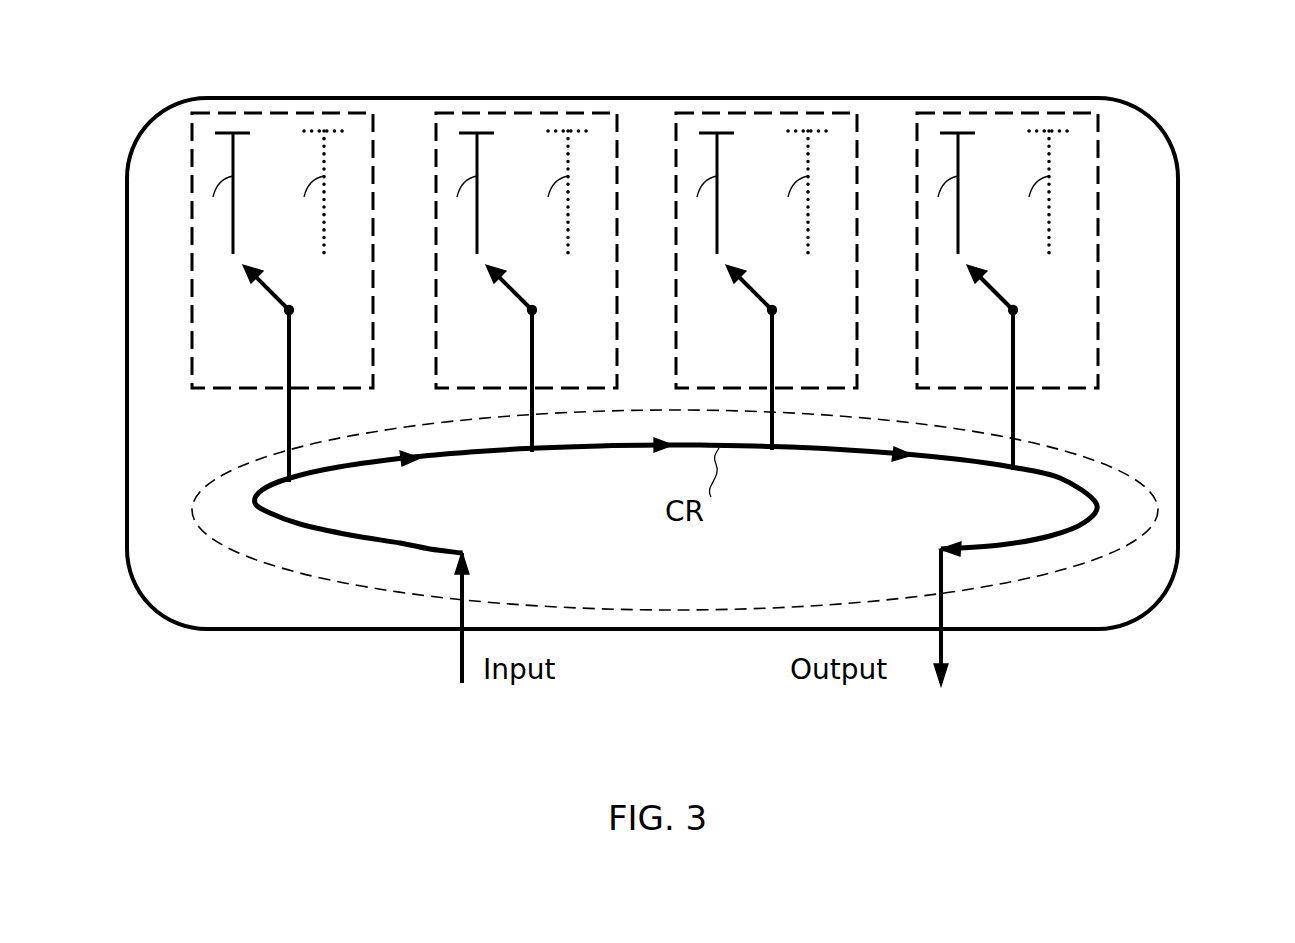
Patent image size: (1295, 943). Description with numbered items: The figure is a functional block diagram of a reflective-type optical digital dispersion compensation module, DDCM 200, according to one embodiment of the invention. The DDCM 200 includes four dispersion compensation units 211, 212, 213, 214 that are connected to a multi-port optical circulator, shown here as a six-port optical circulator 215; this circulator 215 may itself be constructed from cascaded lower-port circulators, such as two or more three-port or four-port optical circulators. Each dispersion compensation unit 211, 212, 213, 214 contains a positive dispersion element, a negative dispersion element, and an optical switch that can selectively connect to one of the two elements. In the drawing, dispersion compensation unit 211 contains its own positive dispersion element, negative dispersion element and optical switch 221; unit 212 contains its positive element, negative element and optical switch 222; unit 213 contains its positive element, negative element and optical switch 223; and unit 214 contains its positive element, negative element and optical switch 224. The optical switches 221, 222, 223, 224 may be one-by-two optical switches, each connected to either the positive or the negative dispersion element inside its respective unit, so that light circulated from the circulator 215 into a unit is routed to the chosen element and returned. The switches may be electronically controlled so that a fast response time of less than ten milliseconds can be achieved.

The digital dispersion compensation module 200 is at (1020, 629).
The 6-port optical circulator 215 is at (1140, 486).
The dispersion compensation unit 211 is at (291, 112).
The dispersion compensation unit 212 is at (535, 112).
The dispersion compensation unit 213 is at (776, 112).
The dispersion compensation unit 214 is at (1021, 112).
The optical switch 221 is at (270, 300).
The optical switch 222 is at (513, 300).
The optical switch 223 is at (753, 300).
The optical switch 224 is at (994, 300).